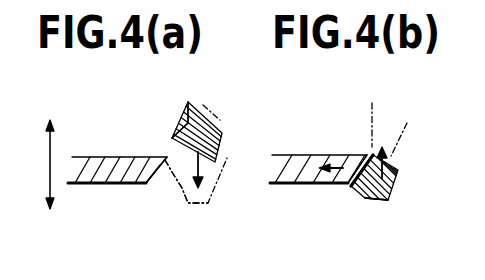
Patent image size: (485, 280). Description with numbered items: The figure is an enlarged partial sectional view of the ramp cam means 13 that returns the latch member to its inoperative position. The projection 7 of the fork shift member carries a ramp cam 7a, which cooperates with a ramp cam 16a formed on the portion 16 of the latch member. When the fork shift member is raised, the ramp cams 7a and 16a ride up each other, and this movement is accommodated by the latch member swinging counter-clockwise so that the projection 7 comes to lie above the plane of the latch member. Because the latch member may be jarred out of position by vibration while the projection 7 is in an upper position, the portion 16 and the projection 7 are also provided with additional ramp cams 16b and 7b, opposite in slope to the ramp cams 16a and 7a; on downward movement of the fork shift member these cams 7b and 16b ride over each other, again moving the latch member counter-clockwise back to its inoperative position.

In FIG. 4A, the projection 7 is at (222, 131).
In FIG. 4B, the projection 7 is at (400, 171).
In FIG. 4A, the ramp cam 7a is at (178, 131).
In FIG. 4B, the ramp cam 7a is at (389, 203).
In FIG. 4A, the additional ramp cam 7b is at (184, 206).
In FIG. 4B, the additional ramp cam 7b is at (353, 195).
In FIG. 4A, the ramp cam means 13 is at (165, 185).
In FIG. 4B, the ramp cam means 13 is at (357, 211).
In FIG. 4A, the portion 16 is at (88, 162).
In FIG. 4B, the portion 16 is at (288, 160).
In FIG. 4A, the ramp cam 16a is at (151, 186).
In FIG. 4B, the ramp cam 16a is at (353, 188).
In FIG. 4A, the additional ramp cam 16b is at (164, 156).
In FIG. 4B, the additional ramp cam 16b is at (363, 152).